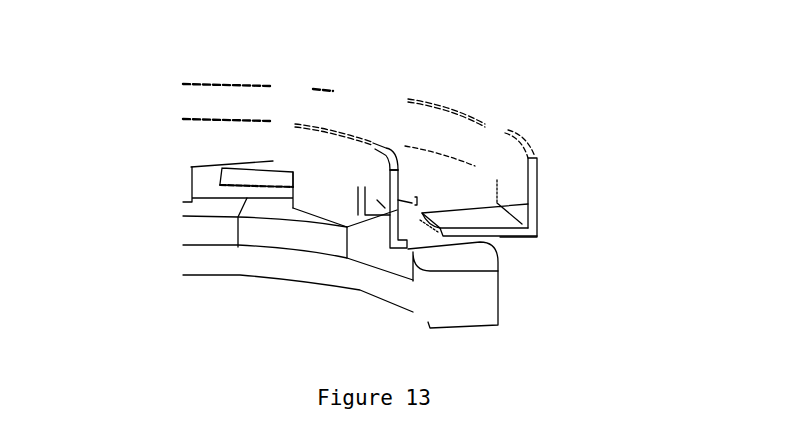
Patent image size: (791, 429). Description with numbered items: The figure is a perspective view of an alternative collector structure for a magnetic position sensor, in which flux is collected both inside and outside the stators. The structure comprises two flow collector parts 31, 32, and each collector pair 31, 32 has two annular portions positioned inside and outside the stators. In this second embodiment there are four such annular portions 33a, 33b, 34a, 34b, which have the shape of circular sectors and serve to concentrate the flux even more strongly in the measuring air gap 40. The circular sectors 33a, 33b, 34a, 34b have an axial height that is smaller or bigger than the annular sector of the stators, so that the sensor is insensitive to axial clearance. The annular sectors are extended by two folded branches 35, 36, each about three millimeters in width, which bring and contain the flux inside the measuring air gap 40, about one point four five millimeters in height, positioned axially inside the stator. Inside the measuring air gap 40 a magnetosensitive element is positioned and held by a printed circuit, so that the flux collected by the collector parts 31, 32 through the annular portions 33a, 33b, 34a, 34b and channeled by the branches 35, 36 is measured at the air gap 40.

The flow collector part 31 is at (533, 135).
The flow collector part 32 is at (191, 167).
The annular portion 33a is at (548, 202).
The annular portion 33b is at (485, 188).
The annular portion 34a is at (300, 182).
The annular portion 34b is at (405, 217).
The folded branch 35 is at (494, 103).
The folded branch 36 is at (380, 120).
The measuring air gap 40 is at (453, 112).